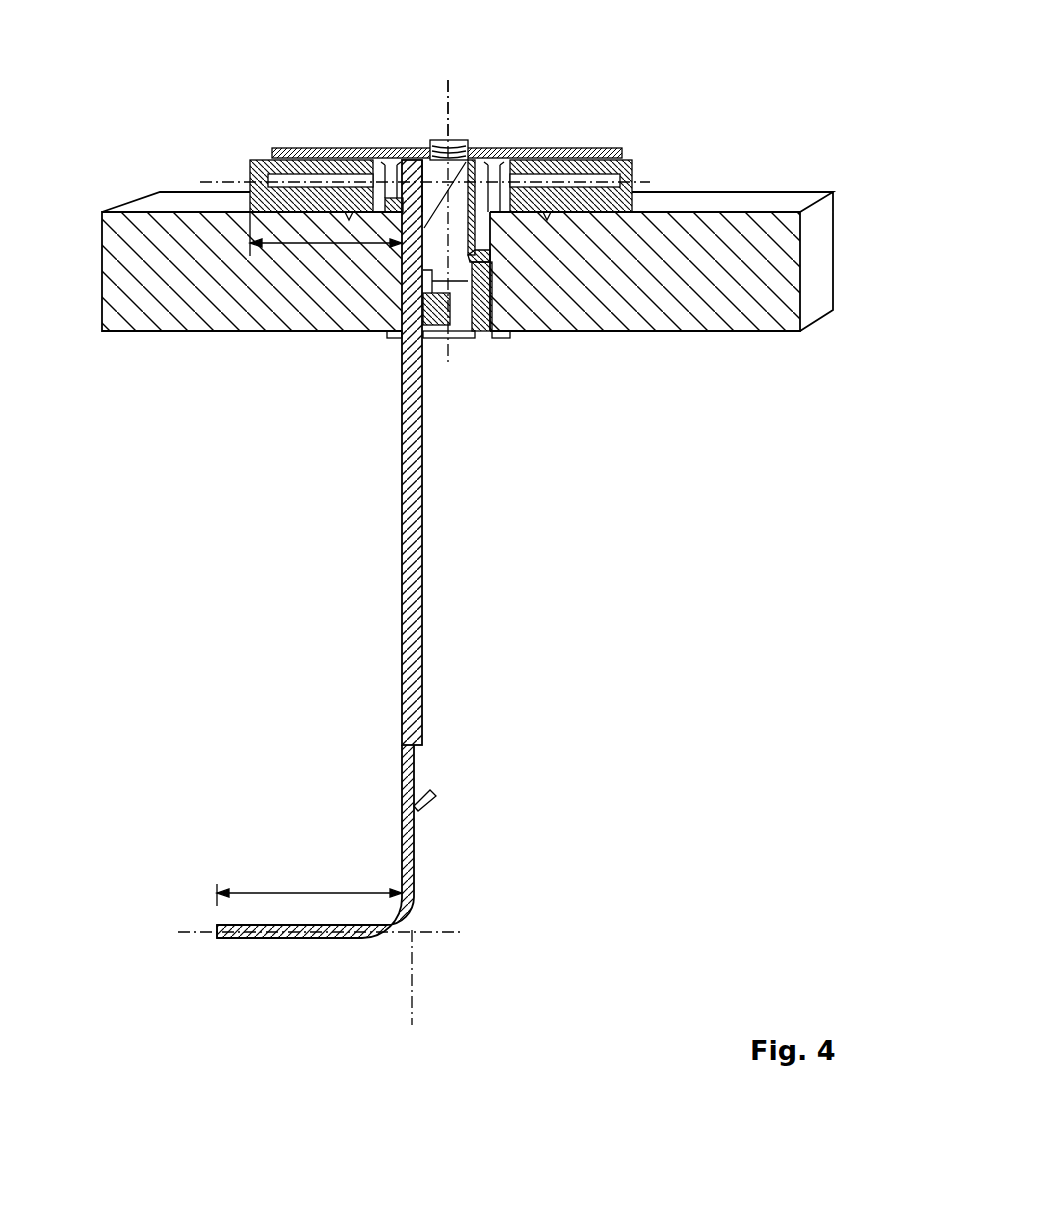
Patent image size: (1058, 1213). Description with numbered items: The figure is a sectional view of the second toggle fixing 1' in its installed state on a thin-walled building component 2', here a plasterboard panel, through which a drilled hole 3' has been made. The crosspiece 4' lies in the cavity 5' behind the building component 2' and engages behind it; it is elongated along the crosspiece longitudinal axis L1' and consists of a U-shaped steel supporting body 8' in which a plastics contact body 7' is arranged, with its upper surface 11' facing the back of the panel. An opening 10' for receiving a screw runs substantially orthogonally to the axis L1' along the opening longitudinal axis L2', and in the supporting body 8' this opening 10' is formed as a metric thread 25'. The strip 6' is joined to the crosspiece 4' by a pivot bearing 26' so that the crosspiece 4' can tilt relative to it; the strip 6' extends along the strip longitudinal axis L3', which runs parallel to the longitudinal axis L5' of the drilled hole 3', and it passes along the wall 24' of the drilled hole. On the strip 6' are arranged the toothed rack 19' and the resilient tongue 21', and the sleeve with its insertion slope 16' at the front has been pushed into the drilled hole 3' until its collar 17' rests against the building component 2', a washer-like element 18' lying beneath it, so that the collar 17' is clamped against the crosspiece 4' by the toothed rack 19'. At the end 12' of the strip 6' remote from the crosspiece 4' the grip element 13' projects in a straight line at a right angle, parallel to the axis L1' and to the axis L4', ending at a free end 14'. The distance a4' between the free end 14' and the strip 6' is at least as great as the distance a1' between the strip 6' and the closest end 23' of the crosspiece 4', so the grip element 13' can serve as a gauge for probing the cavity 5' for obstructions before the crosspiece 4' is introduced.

The toggle fixing 1' is at (370, 199).
The thin-walled building component 2' is at (467, 298).
The drilled hole 3' is at (524, 284).
The crosspiece 4' is at (447, 121).
The cavity 5' is at (510, 257).
The strip 6' is at (364, 873).
The contact body 7' is at (253, 148).
The supporting body 8' is at (558, 146).
The opening 10' is at (417, 131).
The top surface of component 11' is at (738, 160).
The end of the strip 12' is at (370, 841).
The grip element 13' is at (364, 873).
The free end 14' is at (228, 963).
The insertion slope 16' is at (529, 328).
The collar 17' is at (510, 334).
The washer 18' is at (377, 382).
The toothed rack 19' is at (464, 452).
The resilient tongue 21' is at (469, 820).
The end of the crosspiece 23' is at (308, 141).
The wall of the drilled hole 24' is at (390, 337).
The thread 25' is at (414, 121).
The pivot bearing 26' is at (496, 167).
The crosspiece longitudinal axis L1' is at (405, 146).
The opening longitudinal axis L2' is at (479, 199).
The strip longitudinal axis L3' is at (463, 987).
The axis L4 L4' is at (347, 968).
The longitudinal axis of the drilled hole L5' is at (501, 86).
The distance between strip and crosspiece end a1' is at (326, 249).
The distance between free end and strip a4' is at (309, 881).